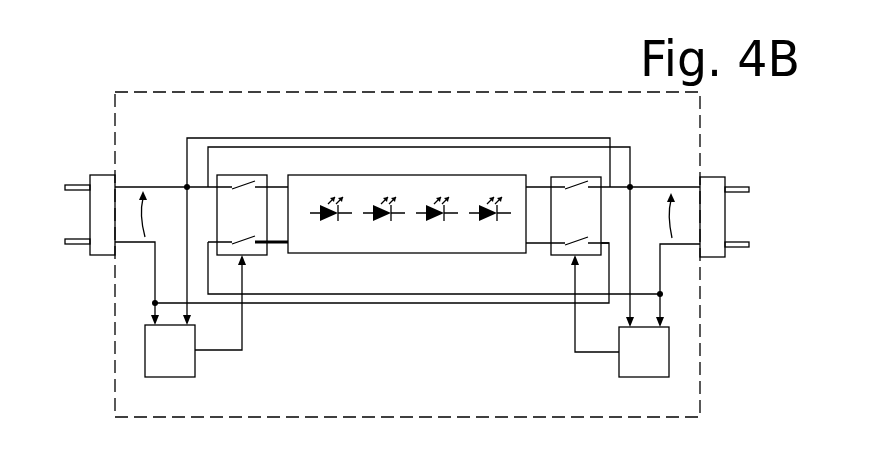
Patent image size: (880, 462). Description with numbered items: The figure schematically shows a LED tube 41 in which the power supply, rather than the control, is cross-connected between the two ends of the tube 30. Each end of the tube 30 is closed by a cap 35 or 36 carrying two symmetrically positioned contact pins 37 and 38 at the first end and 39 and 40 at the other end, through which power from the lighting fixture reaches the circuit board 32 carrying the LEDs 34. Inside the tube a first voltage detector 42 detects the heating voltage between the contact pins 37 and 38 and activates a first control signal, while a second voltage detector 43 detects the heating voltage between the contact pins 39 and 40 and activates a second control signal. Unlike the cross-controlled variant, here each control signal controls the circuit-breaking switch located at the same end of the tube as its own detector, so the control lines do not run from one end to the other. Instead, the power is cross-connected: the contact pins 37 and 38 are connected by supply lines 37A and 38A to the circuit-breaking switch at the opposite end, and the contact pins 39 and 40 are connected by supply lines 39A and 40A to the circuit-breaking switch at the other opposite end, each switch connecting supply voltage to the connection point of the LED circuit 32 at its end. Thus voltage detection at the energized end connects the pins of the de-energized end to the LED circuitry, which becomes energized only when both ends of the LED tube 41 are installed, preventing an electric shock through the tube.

The tube 30 is at (503, 92).
The circuit board 32 is at (415, 236).
The LEDs 34 is at (328, 218).
The cap 35 is at (105, 176).
The cap 36 is at (715, 177).
The contact pin 37 is at (77, 186).
The contact pin 38 is at (75, 246).
The contact pin 39 is at (750, 189).
The contact pin 40 is at (748, 248).
The supply line 37A is at (282, 138).
The supply line 38A is at (385, 303).
The supply line 39A is at (618, 147).
The supply line 40A is at (385, 294).
The LED tube 41 is at (437, 79).
The voltage detector 42 is at (195, 377).
The voltage detector 43 is at (619, 377).